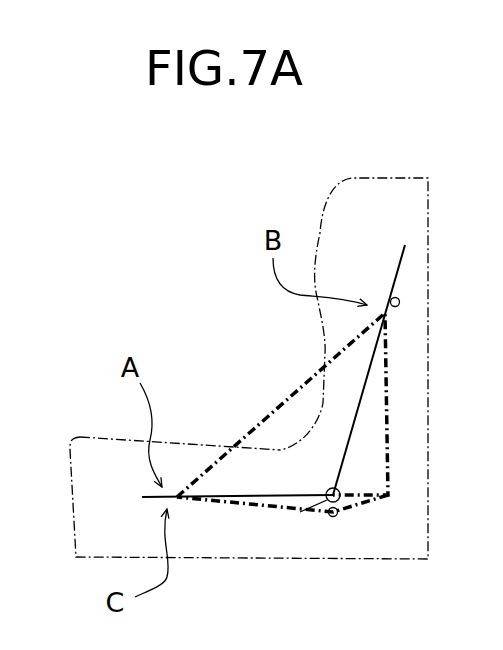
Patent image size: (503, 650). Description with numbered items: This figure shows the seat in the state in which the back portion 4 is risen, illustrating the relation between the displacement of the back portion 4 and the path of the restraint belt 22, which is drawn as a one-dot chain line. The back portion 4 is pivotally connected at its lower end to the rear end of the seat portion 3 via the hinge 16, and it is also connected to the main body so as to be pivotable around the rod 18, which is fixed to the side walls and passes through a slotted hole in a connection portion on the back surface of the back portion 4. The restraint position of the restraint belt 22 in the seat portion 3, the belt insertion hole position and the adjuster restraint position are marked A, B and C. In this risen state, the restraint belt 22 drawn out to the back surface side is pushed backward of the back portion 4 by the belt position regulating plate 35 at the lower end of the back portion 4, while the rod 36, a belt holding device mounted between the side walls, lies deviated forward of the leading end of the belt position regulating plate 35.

The seat portion 3 is at (265, 497).
The back portion 4 is at (394, 265).
The hinge 16 is at (300, 512).
The rod 18 is at (400, 302).
The restraint belt 22 is at (280, 400).
The belt position regulating plate 35 is at (363, 488).
The rod 36 is at (330, 515).